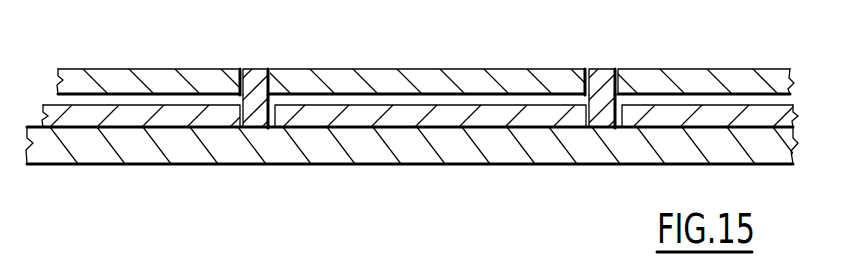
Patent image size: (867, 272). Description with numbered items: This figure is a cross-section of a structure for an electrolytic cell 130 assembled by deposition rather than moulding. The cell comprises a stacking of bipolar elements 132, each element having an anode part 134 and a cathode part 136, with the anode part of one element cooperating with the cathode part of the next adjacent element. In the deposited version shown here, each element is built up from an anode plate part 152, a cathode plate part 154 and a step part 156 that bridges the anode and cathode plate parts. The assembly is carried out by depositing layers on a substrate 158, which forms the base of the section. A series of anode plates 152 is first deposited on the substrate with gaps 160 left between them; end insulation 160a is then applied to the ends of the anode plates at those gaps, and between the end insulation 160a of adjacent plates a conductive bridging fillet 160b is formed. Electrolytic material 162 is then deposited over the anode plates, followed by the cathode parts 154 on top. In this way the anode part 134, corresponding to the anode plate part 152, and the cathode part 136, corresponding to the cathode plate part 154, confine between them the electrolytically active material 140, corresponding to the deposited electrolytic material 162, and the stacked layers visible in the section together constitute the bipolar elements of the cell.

The electrolytic cell 130 is at (457, 100).
The bipolar element 132 is at (273, 79).
The anode part 134 is at (158, 114).
The cathode part 136 is at (358, 78).
The electrolytically active material 140 is at (128, 96).
The anode plate part 152 is at (420, 163).
The cathode plate part 154 is at (431, 47).
The step part 156 is at (272, 126).
The substrate 158 is at (403, 150).
The gap 160 is at (420, 111).
The end insulation 160a is at (252, 118).
The conductive bridging fillet 160b is at (255, 73).
The electrolytic material 162 is at (425, 48).